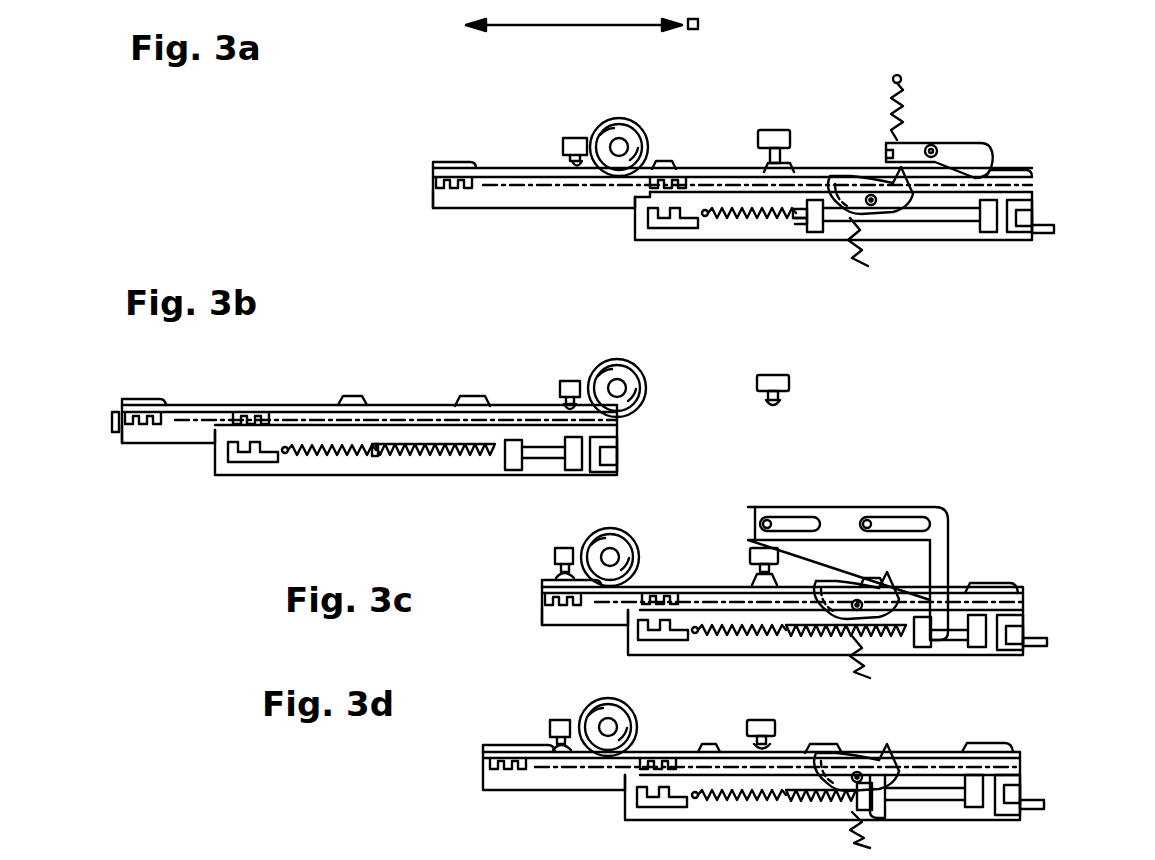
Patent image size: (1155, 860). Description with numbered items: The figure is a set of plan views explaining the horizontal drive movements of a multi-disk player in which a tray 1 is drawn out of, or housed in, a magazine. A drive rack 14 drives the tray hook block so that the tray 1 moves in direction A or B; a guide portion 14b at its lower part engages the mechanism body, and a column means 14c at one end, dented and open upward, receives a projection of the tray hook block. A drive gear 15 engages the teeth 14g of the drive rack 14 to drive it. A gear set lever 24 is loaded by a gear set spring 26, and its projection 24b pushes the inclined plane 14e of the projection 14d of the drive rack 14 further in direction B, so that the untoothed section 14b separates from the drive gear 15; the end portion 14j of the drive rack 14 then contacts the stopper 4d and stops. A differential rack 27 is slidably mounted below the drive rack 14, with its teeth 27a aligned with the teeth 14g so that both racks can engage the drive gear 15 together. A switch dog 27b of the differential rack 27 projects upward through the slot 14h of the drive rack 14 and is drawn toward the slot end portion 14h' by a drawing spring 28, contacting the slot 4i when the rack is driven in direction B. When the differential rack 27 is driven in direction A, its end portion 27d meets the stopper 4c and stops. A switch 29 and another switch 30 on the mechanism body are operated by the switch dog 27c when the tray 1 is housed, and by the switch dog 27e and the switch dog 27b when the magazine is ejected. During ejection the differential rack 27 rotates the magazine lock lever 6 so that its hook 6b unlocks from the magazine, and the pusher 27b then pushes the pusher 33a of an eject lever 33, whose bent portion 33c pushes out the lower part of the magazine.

In FIG. 3A, the tray 1 is at (572, 25).
In FIG. 3B, the stopper 4c is at (115, 432).
In FIG. 3A, the stopper 4d is at (1055, 232).
In FIG. 3C, the stopper 4d is at (1047, 645).
In FIG. 3D, the stopper 4d is at (1045, 806).
In FIG. 3A, the spring seat 4i is at (797, 218).
In FIG. 3B, the spring seat 4i is at (376, 457).
In FIG. 3C, the magazine lock lever 6 is at (838, 600).
In FIG. 3C, the hook 6b is at (890, 578).
In FIG. 3D, the hook 6b is at (890, 752).
In FIG. 3A, the drive rack 14 is at (921, 240).
In FIG. 3B, the drive rack 14 is at (392, 473).
In FIG. 3A, the guide portion / untoothed section 14b is at (640, 197).
In FIG. 3A, the column means 14c is at (668, 228).
In FIG. 3A, the projection 14d is at (1032, 175).
In FIG. 3D, the projection 14d is at (1005, 748).
In FIG. 3A, the inclined plane 14e is at (1035, 193).
In FIG. 3A, the teeth 14g is at (850, 175).
In FIG. 3A, the slot 14h is at (975, 256).
In FIG. 3A, the end portion of the slot 14h' is at (825, 279).
In FIG. 3A, the end portion 14j is at (1022, 232).
In FIG. 3A, the drive gear 15 is at (641, 125).
In FIG. 3B, the drive gear 15 is at (646, 380).
In FIG. 3C, the drive gear 15 is at (618, 540).
In FIG. 3D, the drive gear 15 is at (632, 720).
In FIG. 3A, the gear set lever 24 is at (928, 142).
In FIG. 3A, the projection 24b is at (985, 160).
In FIG. 3A, the gear set spring 26 is at (893, 115).
In FIG. 3A, the differential rack 27 is at (510, 208).
In FIG. 3B, the differential rack 27 is at (165, 437).
In FIG. 3C, the differential rack 27 is at (592, 627).
In FIG. 3A, the teeth 27a is at (521, 175).
In FIG. 3A, the switch dog / pusher 27b is at (447, 162).
In FIG. 3B, the switch dog / pusher 27b is at (140, 397).
In FIG. 3C, the switch dog / pusher 27b is at (545, 580).
In FIG. 3D, the switch dog / pusher 27b is at (500, 745).
In FIG. 3A, the switch dog 27c is at (786, 165).
In FIG. 3B, the switch dog 27c is at (472, 397).
In FIG. 3C, the switch dog 27c is at (866, 578).
In FIG. 3D, the switch dog 27c is at (822, 745).
In FIG. 3A, the end portion 27d is at (436, 195).
In FIG. 3B, the end portion 27d is at (127, 440).
In FIG. 3C, the end portion 27d is at (545, 615).
In FIG. 3A, the switch dog 27e is at (668, 160).
In FIG. 3B, the switch dog 27e is at (354, 396).
In FIG. 3C, the switch dog 27e is at (755, 577).
In FIG. 3D, the switch dog 27e is at (708, 745).
In FIG. 3A, the drawing spring 28 is at (752, 216).
In FIG. 3B, the drawing spring 28 is at (343, 458).
In FIG. 3A, the switch 29 is at (771, 130).
In FIG. 3B, the switch 29 is at (769, 375).
In FIG. 3C, the switch 29 is at (750, 553).
In FIG. 3D, the switch 29 is at (757, 720).
In FIG. 3A, the switch 30 is at (585, 138).
In FIG. 3B, the switch 30 is at (571, 380).
In FIG. 3C, the switch 30 is at (560, 548).
In FIG. 3D, the switch 30 is at (560, 720).
In FIG. 3C, the eject lever 33 is at (948, 518).
In FIG. 3C, the pusher 33a is at (946, 632).
In FIG. 3D, the pusher 33a is at (885, 810).
In FIG. 3C, the bent portion 33c is at (752, 510).